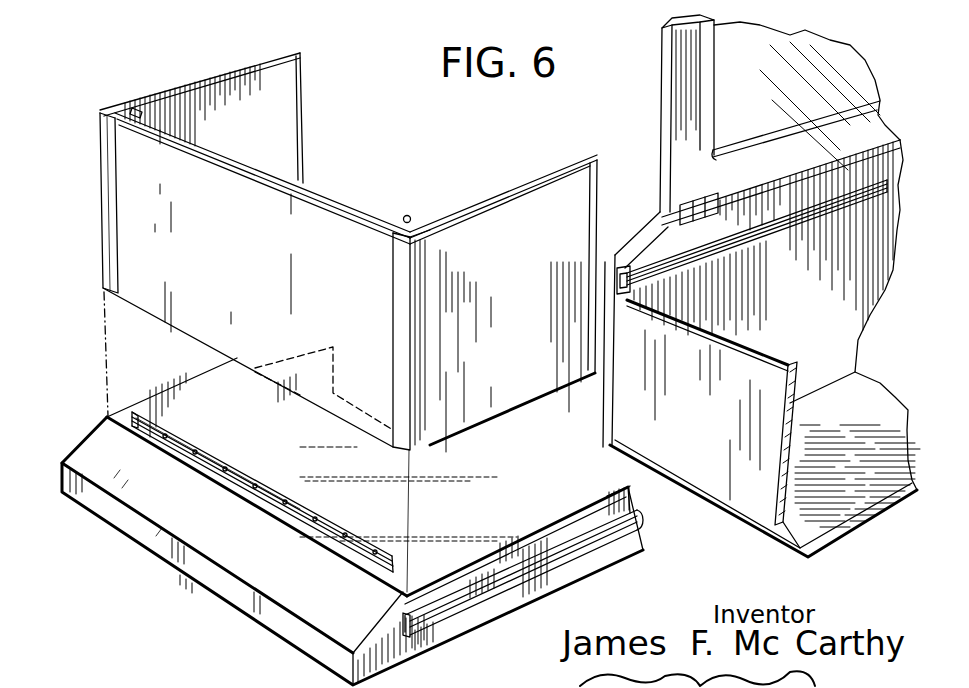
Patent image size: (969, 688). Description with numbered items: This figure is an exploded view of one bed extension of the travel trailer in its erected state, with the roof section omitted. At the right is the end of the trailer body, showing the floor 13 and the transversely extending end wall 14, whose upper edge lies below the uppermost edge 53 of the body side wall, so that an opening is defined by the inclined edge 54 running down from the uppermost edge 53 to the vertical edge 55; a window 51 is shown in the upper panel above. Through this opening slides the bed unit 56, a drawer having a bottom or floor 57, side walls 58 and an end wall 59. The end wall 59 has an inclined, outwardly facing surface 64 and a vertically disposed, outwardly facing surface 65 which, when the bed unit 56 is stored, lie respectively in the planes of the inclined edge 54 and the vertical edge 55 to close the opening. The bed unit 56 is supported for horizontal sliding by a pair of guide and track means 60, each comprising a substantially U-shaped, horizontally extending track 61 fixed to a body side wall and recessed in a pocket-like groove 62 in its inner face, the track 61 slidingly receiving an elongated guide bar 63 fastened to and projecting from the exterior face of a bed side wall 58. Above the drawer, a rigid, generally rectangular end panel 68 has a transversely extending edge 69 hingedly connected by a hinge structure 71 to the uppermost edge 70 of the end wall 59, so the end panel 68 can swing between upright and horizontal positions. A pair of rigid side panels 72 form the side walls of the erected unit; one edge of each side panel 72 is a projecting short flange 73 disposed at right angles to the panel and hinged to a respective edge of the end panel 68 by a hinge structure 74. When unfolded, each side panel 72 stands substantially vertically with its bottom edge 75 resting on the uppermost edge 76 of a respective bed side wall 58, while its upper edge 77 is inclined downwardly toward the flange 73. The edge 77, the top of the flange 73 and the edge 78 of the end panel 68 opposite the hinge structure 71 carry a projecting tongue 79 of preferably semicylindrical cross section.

The floor 13 is at (850, 490).
The end wall 14 is at (706, 429).
The window 51 is at (770, 75).
The uppermost edge 53 is at (657, 195).
The inclined edge 54 is at (640, 232).
The vertical edge 55 is at (618, 268).
The bed unit 56 is at (340, 603).
The bed unit floor 57 is at (485, 500).
The bed unit side wall 58 is at (178, 413).
The bed unit end wall 59 is at (210, 572).
The guide and track means 60 is at (590, 555).
The track 61 is at (780, 232).
The groove 62 is at (615, 285).
The guide bar 63 is at (440, 620).
The inclined surface 64 is at (155, 498).
The vertical surface 65 is at (172, 548).
The end panel 68 is at (308, 230).
The transversely extending edge 69 is at (205, 352).
The uppermost edge 70 is at (330, 537).
The hinge structure 71 is at (262, 490).
The side panel 72 is at (300, 80).
The flange 73 is at (108, 140).
The hinge structure 74 is at (138, 110).
The bottom edge 75 is at (510, 410).
The uppermost edge 76 is at (520, 538).
The edge 77 is at (108, 205).
The edge 78 is at (322, 187).
The tongue 79 is at (210, 78).